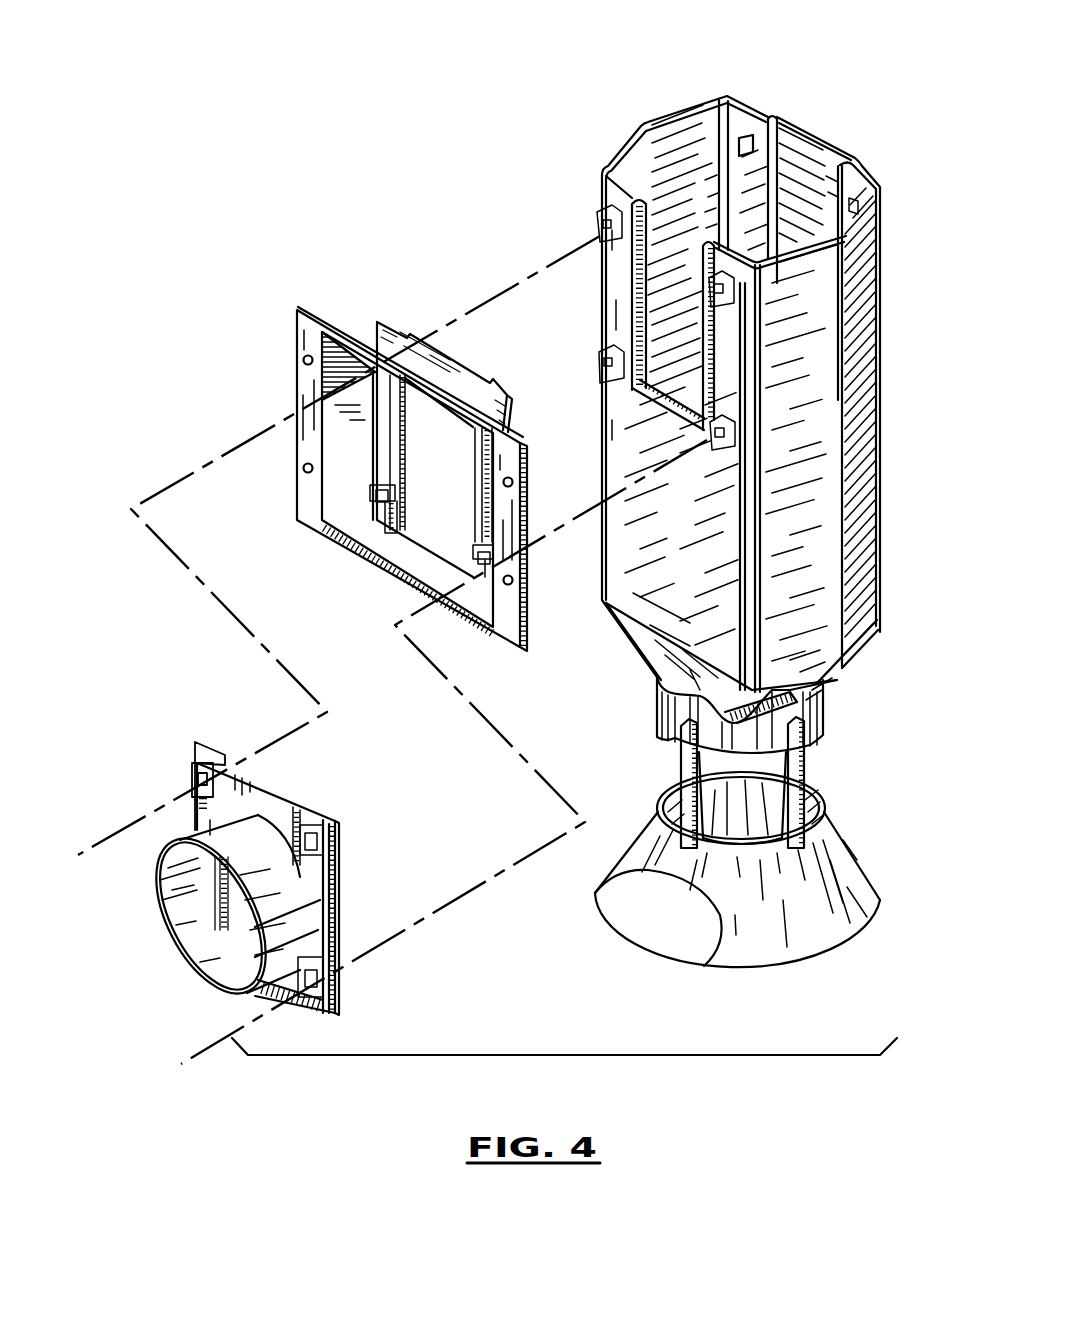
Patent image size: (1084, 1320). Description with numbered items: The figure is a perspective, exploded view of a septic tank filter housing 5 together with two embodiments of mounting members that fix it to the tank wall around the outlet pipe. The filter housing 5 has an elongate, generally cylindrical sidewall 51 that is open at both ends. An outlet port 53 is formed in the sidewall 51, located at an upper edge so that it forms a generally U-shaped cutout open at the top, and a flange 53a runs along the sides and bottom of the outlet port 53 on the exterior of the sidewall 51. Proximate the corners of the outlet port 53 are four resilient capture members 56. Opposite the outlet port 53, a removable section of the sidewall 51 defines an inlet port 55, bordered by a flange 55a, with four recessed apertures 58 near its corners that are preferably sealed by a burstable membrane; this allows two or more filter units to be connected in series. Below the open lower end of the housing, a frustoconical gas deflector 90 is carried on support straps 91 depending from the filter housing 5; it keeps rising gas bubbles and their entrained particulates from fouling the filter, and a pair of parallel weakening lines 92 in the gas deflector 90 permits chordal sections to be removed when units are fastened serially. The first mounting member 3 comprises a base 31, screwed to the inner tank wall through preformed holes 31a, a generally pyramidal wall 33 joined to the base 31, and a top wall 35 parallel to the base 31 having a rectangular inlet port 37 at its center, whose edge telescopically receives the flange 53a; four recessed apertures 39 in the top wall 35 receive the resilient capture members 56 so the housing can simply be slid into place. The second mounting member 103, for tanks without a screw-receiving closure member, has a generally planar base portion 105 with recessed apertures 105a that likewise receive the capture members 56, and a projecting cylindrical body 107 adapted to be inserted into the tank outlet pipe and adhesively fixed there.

The mounting member 3 is at (348, 318).
The filter housing 5 is at (888, 258).
The base 31 is at (307, 500).
The preformed holes 31a is at (305, 359).
The generally pyramidal wall 33 is at (342, 433).
The top wall 35 is at (393, 465).
The rectangular inlet port 37 is at (437, 512).
The recessed apertures 39 is at (375, 508).
The sidewall 51 is at (737, 530).
The outlet port 53 is at (668, 340).
The flange 53a is at (713, 360).
The inlet port 55 is at (808, 162).
The flange 55a is at (770, 114).
The resilient capture members 56 is at (598, 222).
The recessed apertures 58 is at (746, 142).
The frustoconical gas deflector 90 is at (817, 910).
The support straps 91 is at (802, 758).
The weakening lines 92 is at (720, 940).
The mounting member 103 is at (213, 745).
The base portion 105 is at (262, 815).
The recessed apertures 105a is at (323, 853).
The cylindrical body 107 is at (283, 910).